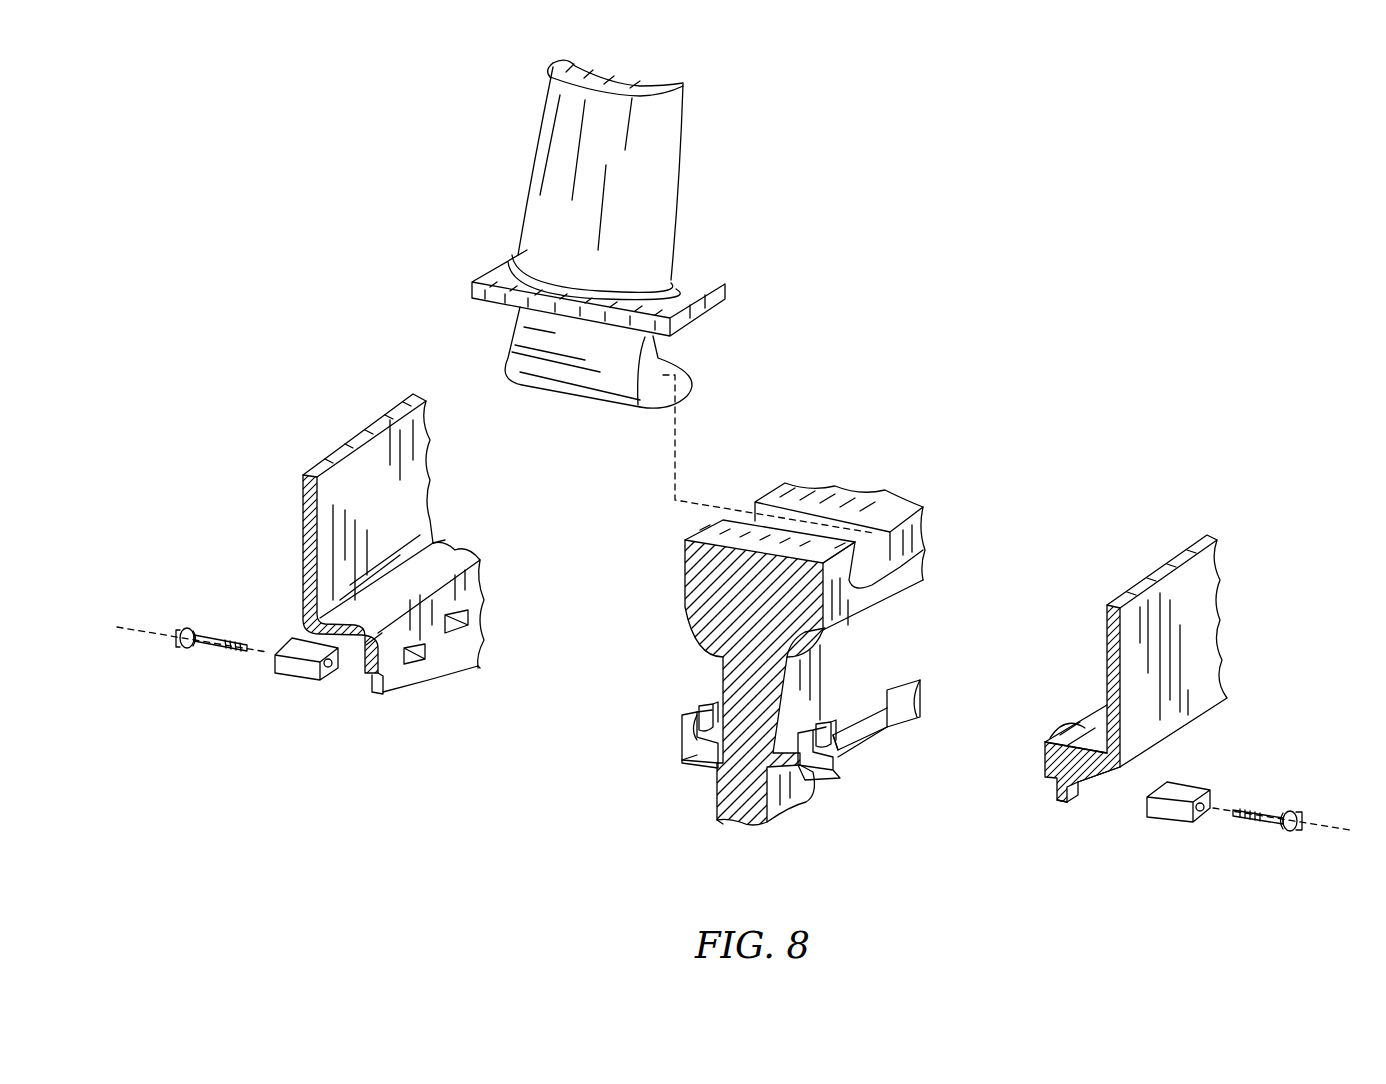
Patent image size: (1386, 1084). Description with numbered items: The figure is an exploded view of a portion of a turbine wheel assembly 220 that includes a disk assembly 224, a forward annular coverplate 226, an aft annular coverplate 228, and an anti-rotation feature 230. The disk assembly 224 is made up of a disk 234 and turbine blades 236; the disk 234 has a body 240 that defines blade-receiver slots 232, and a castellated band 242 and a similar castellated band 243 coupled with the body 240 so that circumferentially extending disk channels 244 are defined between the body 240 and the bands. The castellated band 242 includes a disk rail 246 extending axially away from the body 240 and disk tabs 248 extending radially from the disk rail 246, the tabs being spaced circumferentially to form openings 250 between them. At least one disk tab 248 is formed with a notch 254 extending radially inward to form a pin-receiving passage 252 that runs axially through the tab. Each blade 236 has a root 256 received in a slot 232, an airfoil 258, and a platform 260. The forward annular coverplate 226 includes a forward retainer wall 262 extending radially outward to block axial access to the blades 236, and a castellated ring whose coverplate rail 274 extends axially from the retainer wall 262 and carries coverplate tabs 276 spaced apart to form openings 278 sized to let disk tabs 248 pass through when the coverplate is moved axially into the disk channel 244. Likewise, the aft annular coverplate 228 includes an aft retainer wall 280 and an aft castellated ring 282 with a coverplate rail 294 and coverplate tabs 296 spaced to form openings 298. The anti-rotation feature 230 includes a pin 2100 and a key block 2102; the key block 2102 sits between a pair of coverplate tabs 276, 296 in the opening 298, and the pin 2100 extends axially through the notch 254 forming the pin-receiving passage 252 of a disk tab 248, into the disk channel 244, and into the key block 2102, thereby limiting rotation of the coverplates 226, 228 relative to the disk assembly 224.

The turbine wheel assembly 220 is at (176, 118).
The disk assembly 224 is at (967, 247).
The forward annular coverplate 226 is at (371, 544).
The aft annular coverplate 228 is at (1174, 686).
The anti-rotation feature 230 is at (227, 712).
The blade-receiver slot 232 is at (875, 555).
The disk 234 is at (785, 648).
The turbine blade 236 is at (645, 224).
The body 240 is at (723, 665).
The castellated band 242 is at (697, 775).
The castellated band 243 is at (885, 752).
The disk channel 244 is at (768, 822).
The disk rail 246 is at (805, 803).
The disk tab 248 is at (640, 737).
The opening 250 is at (893, 738).
The pin-receiving passage 252 is at (703, 703).
The notch 254 is at (690, 740).
The root 256 is at (703, 360).
The airfoil 258 is at (675, 182).
The platform 260 is at (700, 287).
The forward retainer wall 262 is at (305, 498).
The coverplate rail 274 is at (463, 562).
The coverplate tab 276 is at (455, 670).
The opening 278 is at (405, 650).
The aft retainer wall 280 is at (1200, 583).
The aft castellated ring 282 is at (1182, 851).
The coverplate rail 294 is at (1070, 728).
The coverplate tab 296 is at (1060, 800).
The opening 298 is at (1097, 776).
The pin 2100 is at (186, 648).
The key block 2102 is at (288, 680).